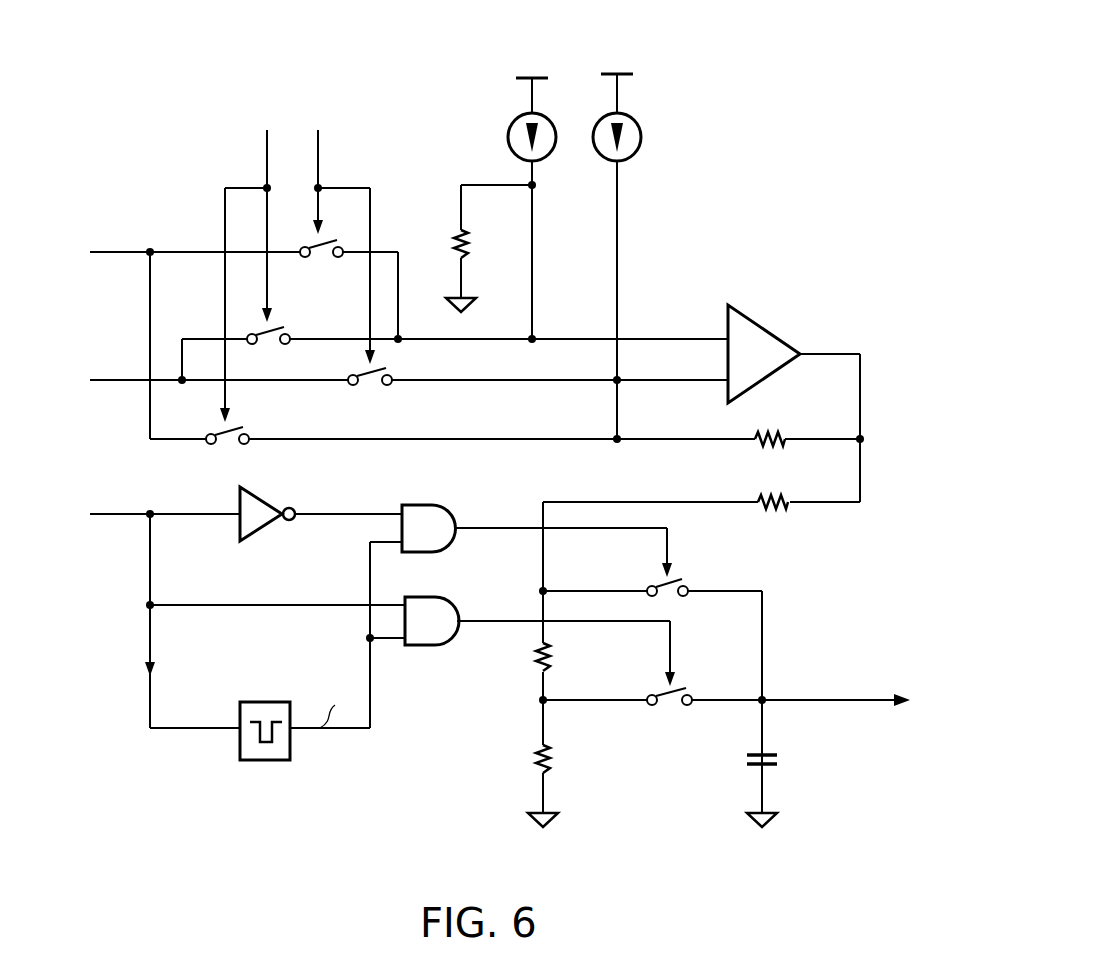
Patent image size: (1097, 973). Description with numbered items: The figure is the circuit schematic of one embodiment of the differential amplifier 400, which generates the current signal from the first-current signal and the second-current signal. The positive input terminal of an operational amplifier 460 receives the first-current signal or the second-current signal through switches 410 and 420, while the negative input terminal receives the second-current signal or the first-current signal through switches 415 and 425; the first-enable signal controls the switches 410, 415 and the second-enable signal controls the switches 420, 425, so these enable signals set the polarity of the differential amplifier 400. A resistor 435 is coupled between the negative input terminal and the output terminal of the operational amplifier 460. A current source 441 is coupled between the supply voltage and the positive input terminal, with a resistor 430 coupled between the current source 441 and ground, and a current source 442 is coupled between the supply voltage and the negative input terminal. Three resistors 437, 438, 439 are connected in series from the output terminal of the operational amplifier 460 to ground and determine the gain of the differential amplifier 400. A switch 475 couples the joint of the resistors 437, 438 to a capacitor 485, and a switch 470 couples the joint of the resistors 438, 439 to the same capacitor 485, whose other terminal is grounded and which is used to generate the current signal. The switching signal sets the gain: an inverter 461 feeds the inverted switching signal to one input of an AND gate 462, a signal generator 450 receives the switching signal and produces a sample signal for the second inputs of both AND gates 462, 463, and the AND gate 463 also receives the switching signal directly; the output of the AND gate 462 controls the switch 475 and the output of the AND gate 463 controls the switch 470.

The differential amplifier 400 is at (876, 53).
The switch 410 is at (258, 346).
The switch 415 is at (209, 447).
The switch 420 is at (312, 258).
The switch 425 is at (362, 388).
The resistor 430 is at (468, 240).
The resistor 435 is at (770, 446).
The resistor 437 is at (775, 510).
The resistor 438 is at (534, 664).
The resistor 439 is at (534, 758).
The current source 441 is at (508, 130).
The current source 442 is at (641, 136).
The signal generator 450 is at (238, 702).
The operational amplifier 460 is at (770, 330).
The inverter 461 is at (272, 489).
The AND gate 462 is at (420, 503).
The AND gate 463 is at (438, 596).
The switch 470 is at (687, 672).
The switch 475 is at (688, 581).
The capacitor 485 is at (779, 760).